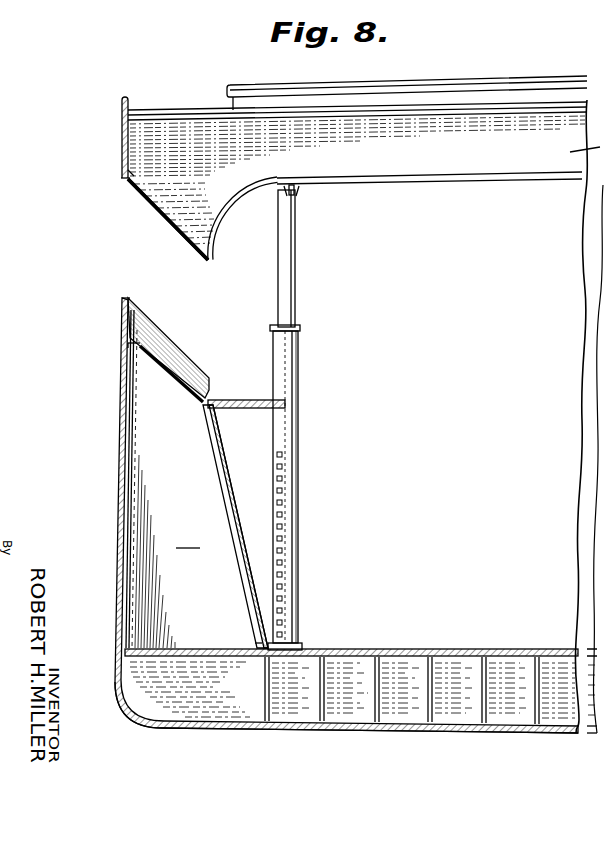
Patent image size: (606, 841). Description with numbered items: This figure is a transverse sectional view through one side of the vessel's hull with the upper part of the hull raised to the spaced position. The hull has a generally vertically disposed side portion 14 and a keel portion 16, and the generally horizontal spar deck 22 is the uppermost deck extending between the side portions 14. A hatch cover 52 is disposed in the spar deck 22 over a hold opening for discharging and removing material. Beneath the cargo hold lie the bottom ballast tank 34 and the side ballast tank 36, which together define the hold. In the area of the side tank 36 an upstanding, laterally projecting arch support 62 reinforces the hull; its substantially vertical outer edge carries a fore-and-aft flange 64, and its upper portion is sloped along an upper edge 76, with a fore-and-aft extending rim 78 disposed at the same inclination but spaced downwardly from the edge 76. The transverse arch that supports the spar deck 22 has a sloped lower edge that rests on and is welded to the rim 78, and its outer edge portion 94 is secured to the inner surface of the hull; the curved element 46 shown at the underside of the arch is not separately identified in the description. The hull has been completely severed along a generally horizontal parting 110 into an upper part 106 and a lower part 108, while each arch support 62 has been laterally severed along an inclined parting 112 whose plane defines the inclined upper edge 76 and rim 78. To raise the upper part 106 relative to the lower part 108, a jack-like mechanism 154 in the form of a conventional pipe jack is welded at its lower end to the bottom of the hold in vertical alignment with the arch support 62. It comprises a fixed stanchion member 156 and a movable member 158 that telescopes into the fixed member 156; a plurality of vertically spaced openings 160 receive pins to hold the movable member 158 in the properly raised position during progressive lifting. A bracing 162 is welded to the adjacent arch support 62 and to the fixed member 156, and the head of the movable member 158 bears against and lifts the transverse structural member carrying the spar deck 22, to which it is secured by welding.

The side portion 14 is at (122, 361).
The keel portion 16 is at (512, 734).
The spar deck 22 is at (171, 111).
The bottom ballast tank 34 is at (466, 660).
The side ballast tank 36 is at (163, 496).
The curved roof edge 46 is at (232, 193).
The hatch cover 52 is at (477, 80).
The arch support 62 is at (188, 540).
The flange 64 is at (128, 443).
The upper edge 76 is at (157, 338).
The rim 78 is at (182, 346).
The outer edge portion 94 is at (122, 167).
The upper part 106 is at (120, 142).
The lower part 108 is at (118, 390).
The parting 110 is at (116, 262).
The parting 112 is at (151, 318).
The jack-like mechanism 154 is at (316, 357).
The fixed stanchion member 156 is at (298, 455).
The movable member 158 is at (296, 248).
The opening 160 is at (277, 456).
The bracing 162 is at (233, 400).